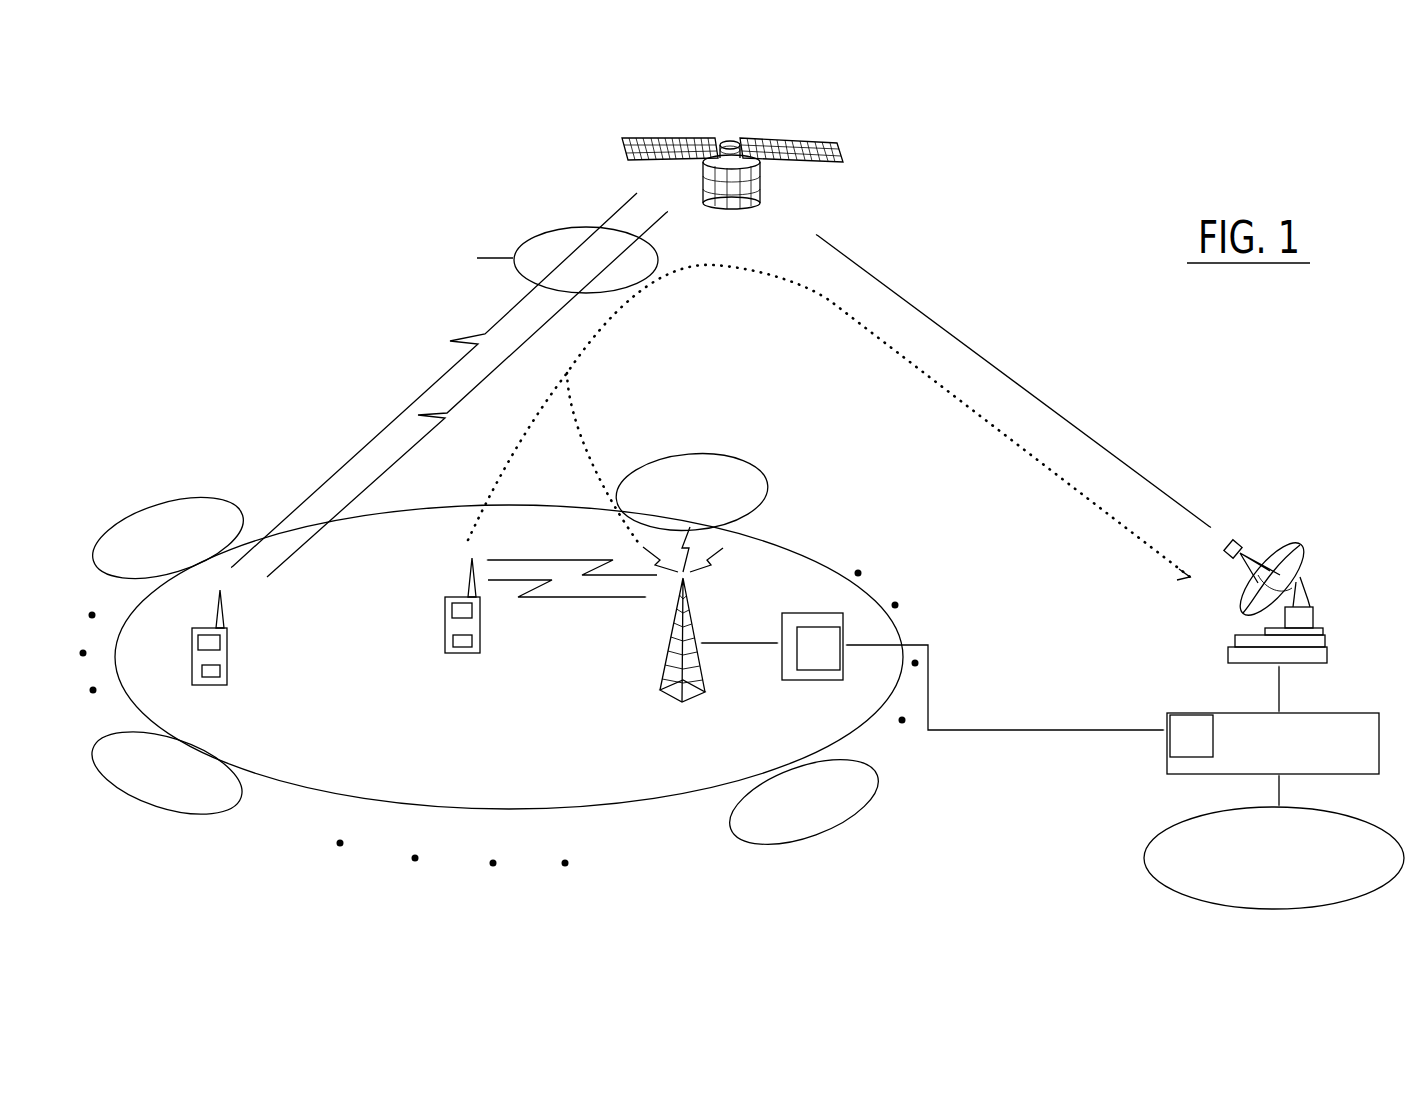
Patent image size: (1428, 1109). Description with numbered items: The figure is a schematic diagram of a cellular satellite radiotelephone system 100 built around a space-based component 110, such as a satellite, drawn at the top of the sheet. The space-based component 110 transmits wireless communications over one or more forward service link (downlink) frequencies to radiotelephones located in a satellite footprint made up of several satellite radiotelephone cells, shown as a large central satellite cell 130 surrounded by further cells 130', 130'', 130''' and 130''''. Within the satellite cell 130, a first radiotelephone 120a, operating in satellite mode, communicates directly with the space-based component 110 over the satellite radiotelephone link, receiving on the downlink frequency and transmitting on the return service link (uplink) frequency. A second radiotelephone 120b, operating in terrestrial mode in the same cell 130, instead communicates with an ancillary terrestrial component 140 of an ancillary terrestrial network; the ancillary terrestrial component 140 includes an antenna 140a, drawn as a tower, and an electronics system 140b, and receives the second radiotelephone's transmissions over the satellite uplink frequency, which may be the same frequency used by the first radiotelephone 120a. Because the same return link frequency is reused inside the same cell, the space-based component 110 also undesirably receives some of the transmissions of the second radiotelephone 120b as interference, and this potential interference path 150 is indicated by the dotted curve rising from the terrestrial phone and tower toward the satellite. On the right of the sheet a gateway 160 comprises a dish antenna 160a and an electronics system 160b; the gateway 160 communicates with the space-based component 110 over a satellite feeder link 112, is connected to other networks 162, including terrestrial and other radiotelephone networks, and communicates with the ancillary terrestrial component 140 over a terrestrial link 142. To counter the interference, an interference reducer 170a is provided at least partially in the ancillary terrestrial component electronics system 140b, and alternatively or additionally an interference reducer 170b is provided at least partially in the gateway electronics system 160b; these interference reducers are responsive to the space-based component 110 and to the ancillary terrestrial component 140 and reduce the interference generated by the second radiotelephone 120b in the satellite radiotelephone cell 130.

The cellular satellite radiotelephone system 100 is at (275, 215).
The space-based component 110 is at (700, 143).
The satellite feeder link 112 is at (913, 308).
The first radiotelephone 120a is at (210, 687).
The second radiotelephone 120b is at (455, 597).
The satellite radiotelephone cell 130 is at (499, 686).
The satellite radiotelephone cell 130' is at (168, 538).
The satellite radiotelephone cell 130'' is at (692, 492).
The satellite radiotelephone cell 130''' is at (804, 801).
The satellite radiotelephone cell 130'''' is at (167, 773).
The ancillary terrestrial component 140 is at (760, 575).
The antenna 140a is at (672, 638).
The electronics system 140b is at (813, 613).
The terrestrial link 142 is at (995, 730).
The potential interference path 150 is at (837, 310).
The gateway 160 is at (1343, 628).
The antenna 160a is at (1304, 552).
The electronics system 160b is at (1347, 713).
The other networks 162 is at (1144, 856).
The interference reducer 170a is at (847, 607).
The interference reducer 170b is at (1188, 713).